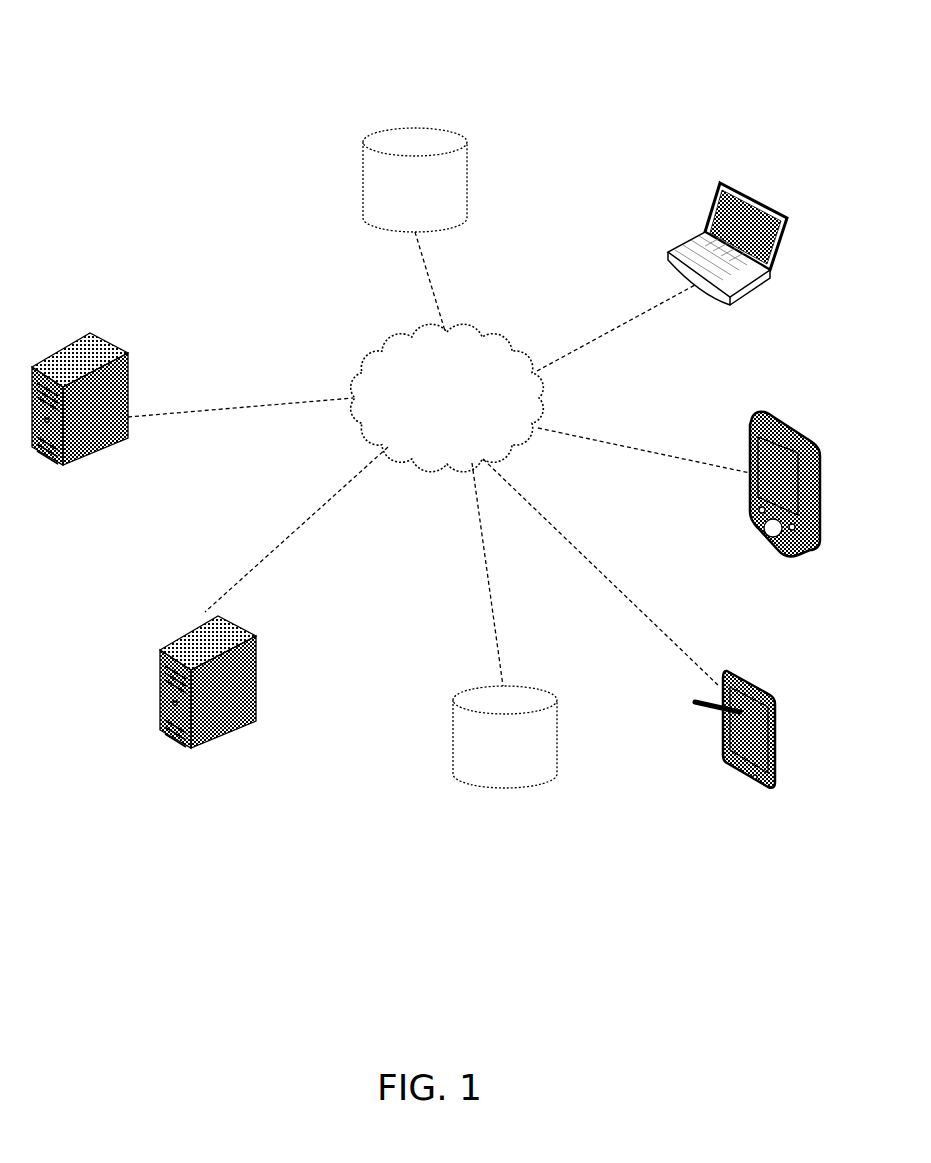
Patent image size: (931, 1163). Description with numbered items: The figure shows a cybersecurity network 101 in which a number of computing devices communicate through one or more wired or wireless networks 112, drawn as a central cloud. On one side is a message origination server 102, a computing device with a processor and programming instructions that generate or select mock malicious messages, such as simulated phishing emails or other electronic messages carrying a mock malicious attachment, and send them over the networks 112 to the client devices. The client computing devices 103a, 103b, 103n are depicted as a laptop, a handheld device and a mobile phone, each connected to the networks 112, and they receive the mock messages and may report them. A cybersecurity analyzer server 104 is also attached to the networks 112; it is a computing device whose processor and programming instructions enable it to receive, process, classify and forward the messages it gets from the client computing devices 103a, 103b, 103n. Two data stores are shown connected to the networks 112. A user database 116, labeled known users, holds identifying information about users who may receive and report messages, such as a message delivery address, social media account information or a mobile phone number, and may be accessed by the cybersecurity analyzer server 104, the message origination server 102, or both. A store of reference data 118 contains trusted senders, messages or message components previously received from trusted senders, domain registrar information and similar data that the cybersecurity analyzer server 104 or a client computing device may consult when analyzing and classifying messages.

The cybersecurity network 101 is at (262, 72).
The message origination server 102 is at (82, 336).
The client computing device 103a is at (785, 237).
The client computing device 103b is at (823, 467).
The client computing device 103n is at (777, 722).
The cybersecurity analyzer server 104 is at (193, 753).
The wired or wireless network 112 is at (448, 465).
The user database 116 is at (407, 127).
The reference data 118 is at (530, 787).